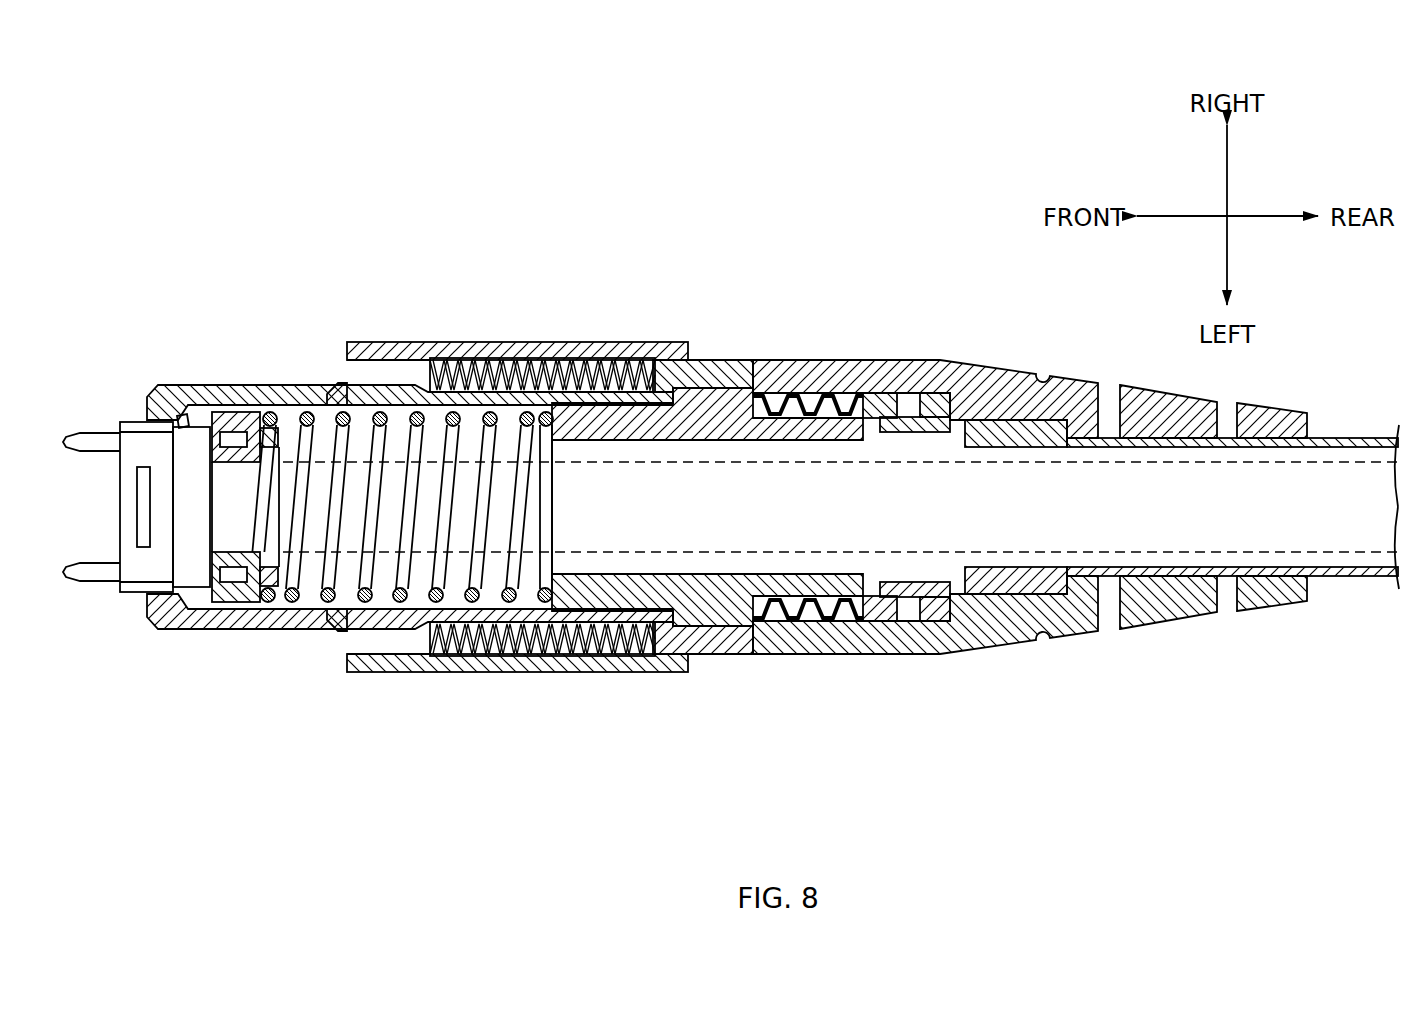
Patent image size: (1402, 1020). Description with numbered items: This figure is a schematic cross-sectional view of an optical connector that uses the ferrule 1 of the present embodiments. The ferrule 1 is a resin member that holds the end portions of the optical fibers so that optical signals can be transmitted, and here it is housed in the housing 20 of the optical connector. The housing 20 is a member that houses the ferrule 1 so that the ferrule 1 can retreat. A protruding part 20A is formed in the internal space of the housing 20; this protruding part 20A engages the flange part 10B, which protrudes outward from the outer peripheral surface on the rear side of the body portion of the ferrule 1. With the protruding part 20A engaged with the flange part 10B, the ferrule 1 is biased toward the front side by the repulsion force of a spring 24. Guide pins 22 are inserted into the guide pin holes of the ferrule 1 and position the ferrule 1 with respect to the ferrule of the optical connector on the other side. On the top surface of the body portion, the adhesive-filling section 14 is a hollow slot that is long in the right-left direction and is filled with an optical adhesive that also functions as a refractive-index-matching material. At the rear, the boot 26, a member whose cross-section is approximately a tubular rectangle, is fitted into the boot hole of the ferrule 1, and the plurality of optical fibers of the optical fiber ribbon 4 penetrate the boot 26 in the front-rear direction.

The ferrule 1 is at (135, 442).
The optical fiber ribbon 4 is at (708, 553).
The flange part 10B is at (186, 418).
The adhesive-filling section 14 is at (128, 503).
The housing 20 is at (720, 368).
The protruding part 20A is at (150, 400).
The guide pins 22 is at (92, 432).
The spring 24 is at (302, 600).
The boot 26 is at (230, 525).